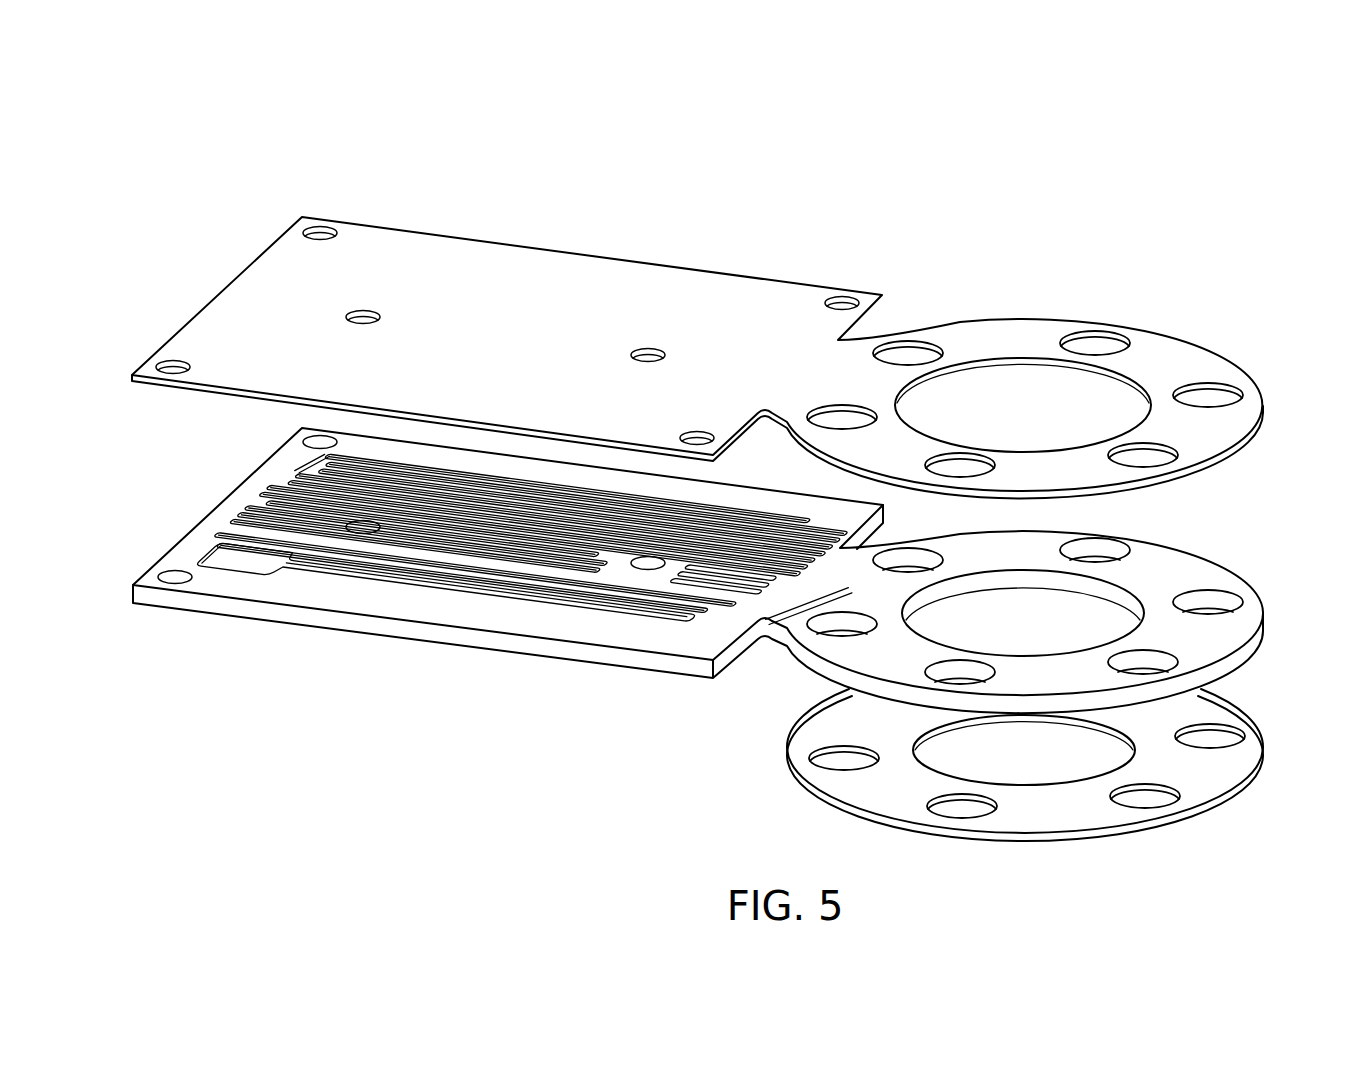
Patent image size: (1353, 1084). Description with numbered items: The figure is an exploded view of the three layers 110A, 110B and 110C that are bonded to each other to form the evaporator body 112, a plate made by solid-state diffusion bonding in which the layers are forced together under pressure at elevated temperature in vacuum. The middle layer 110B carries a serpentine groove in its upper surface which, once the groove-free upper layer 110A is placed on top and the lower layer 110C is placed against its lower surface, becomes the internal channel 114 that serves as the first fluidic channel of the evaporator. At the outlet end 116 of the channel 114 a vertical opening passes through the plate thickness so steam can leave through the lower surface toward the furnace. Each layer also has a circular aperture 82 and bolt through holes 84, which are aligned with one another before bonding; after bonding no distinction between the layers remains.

The evaporator body 112 is at (1085, 167).
The upper layer 110A is at (213, 300).
The middle layer 110B is at (214, 508).
The lower layer 110C is at (788, 760).
The internal channel 114 is at (258, 484).
The outlet end 116 is at (204, 556).
The circular aperture 82 is at (1001, 383).
The bolt through holes 84 is at (1102, 340).